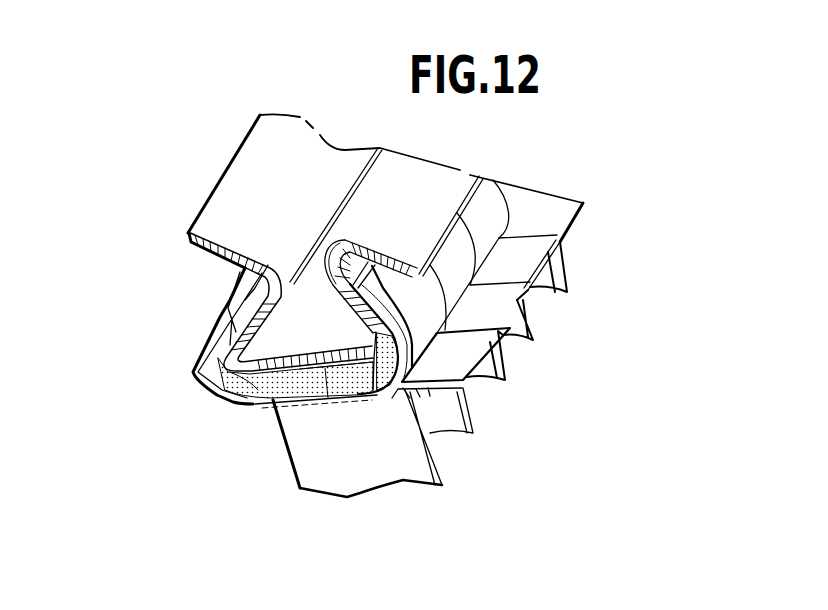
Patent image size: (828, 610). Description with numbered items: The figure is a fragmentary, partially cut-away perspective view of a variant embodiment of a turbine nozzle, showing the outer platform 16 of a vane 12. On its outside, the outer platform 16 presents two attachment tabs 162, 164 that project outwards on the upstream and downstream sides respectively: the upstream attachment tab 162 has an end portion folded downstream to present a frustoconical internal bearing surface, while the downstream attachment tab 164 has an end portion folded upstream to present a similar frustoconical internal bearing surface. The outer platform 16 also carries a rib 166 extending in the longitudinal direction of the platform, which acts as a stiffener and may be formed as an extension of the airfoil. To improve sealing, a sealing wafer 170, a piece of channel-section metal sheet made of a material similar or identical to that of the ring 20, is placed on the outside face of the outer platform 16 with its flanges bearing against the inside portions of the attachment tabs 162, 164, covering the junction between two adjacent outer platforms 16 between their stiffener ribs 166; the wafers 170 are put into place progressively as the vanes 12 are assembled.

The vane 12 is at (447, 468).
The outer platform 16 is at (393, 392).
The ring 20 is at (198, 247).
The upstream attachment tab 162 is at (223, 327).
The downstream attachment tab 164 is at (383, 280).
The rib 166 is at (327, 367).
The sealing wafer 170 is at (252, 402).